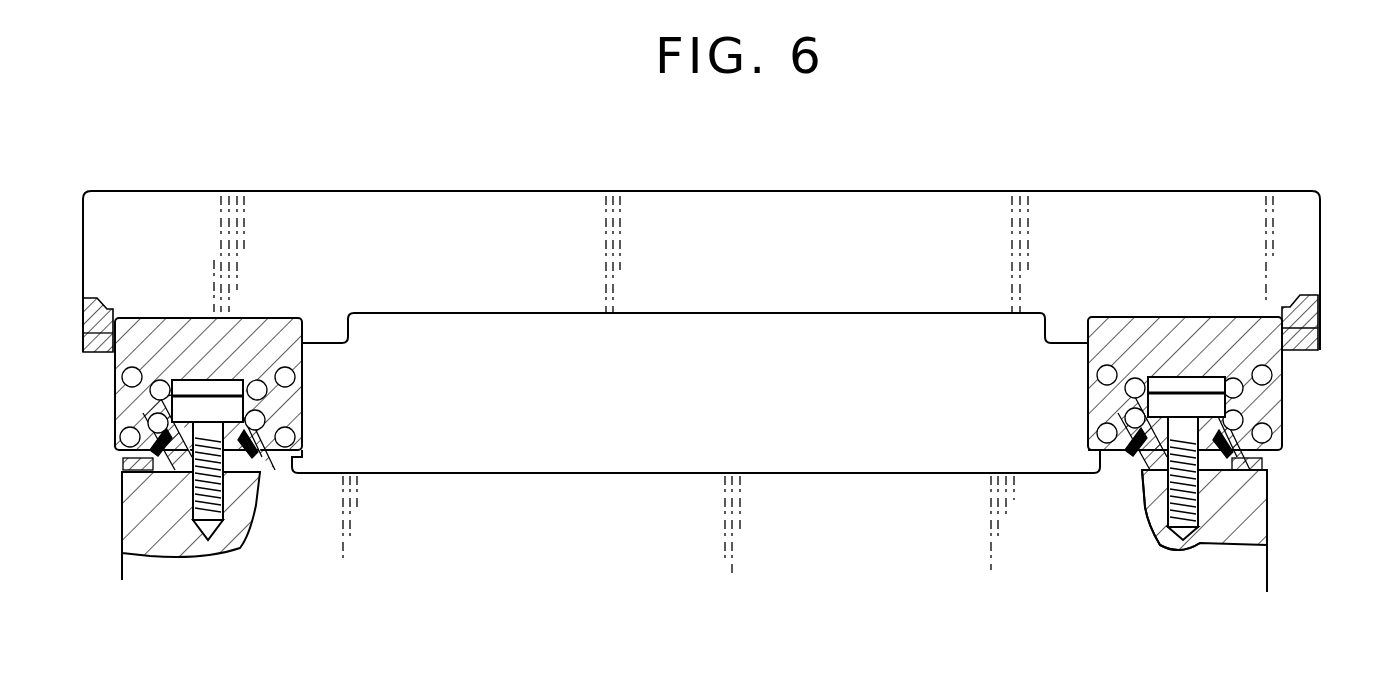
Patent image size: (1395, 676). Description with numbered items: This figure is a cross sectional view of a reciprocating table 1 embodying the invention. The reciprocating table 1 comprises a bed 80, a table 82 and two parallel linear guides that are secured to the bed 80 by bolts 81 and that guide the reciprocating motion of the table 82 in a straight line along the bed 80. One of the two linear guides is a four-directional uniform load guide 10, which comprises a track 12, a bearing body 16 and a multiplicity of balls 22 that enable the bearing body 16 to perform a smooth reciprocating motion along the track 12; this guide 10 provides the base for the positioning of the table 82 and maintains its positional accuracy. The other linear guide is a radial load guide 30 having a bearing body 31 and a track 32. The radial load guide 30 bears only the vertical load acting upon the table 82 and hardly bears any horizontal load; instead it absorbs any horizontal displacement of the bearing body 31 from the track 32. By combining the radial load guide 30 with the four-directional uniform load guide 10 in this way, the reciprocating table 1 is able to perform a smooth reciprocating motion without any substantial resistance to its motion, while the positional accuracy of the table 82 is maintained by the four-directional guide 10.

The reciprocating table 1 is at (300, 182).
The four-directional uniform load guide 10 is at (1282, 452).
The track 12 is at (1245, 497).
The bearing body 16 is at (1152, 317).
The balls 22 is at (286, 395).
The radial load guide 30 is at (104, 462).
The bearing body 31 is at (148, 318).
The track 32 is at (262, 477).
The bed 80 is at (866, 483).
The bolts 81 is at (213, 528).
The table 82 is at (678, 199).